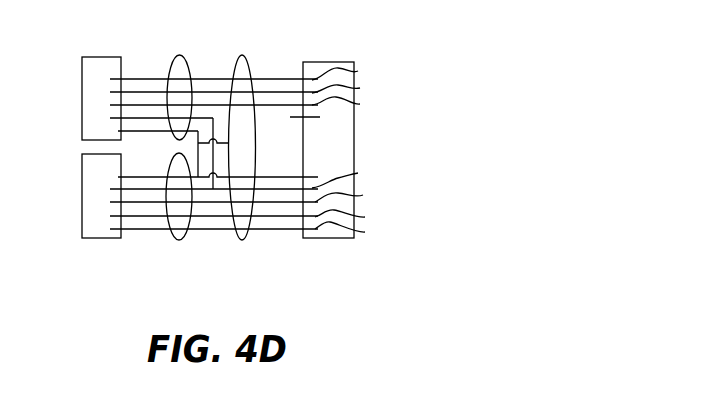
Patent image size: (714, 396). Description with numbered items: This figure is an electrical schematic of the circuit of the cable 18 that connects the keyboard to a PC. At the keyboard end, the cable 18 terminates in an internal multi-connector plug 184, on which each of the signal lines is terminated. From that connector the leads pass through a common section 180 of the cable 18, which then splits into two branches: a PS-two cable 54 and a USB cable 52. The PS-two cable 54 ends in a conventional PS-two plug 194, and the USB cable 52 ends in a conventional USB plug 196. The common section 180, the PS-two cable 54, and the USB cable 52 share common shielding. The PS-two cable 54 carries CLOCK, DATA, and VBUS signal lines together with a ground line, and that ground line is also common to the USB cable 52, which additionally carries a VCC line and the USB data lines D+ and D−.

The cable 18 is at (281, 247).
The USB cable 52 is at (180, 240).
The PS/2 cable 54 is at (176, 57).
The common section 180 is at (250, 70).
The internal multi-connector plug 184 is at (330, 62).
The PS/2 plug 194 is at (82, 120).
The USB plug 196 is at (82, 231).